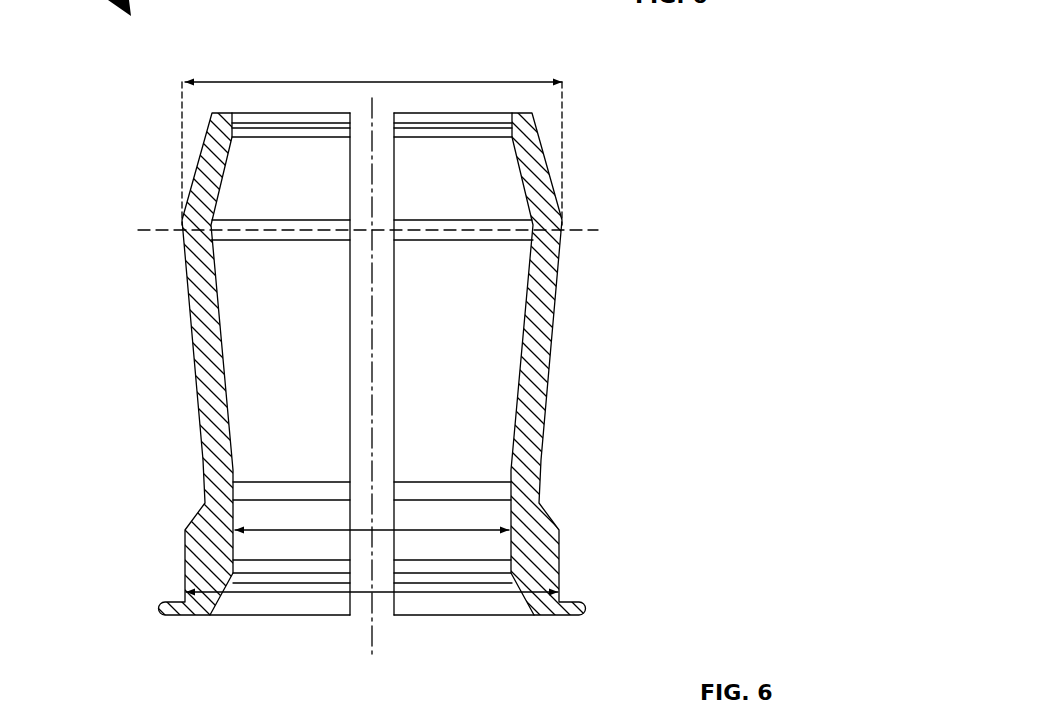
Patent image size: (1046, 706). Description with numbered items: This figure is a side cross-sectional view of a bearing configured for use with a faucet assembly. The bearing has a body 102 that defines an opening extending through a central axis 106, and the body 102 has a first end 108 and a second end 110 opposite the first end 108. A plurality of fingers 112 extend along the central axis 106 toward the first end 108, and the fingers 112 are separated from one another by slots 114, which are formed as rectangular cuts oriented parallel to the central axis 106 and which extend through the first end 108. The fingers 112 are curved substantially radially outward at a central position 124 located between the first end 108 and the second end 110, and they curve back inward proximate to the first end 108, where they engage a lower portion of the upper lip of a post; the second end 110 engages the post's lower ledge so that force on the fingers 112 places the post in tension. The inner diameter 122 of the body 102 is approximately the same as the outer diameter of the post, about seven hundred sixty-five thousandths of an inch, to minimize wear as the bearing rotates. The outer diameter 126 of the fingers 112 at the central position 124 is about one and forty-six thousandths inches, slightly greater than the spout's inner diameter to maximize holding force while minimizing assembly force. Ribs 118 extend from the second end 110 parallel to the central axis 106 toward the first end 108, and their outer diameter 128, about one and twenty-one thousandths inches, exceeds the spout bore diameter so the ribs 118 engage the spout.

The body 102 is at (578, 356).
The central axis 106 is at (372, 357).
The first end 108 is at (290, 62).
The second end 110 is at (255, 626).
The fingers 112 is at (550, 267).
The slots 114 is at (382, 212).
The ribs 118 is at (553, 558).
The inner diameter 122 is at (305, 530).
The central position 124 is at (156, 230).
The outer diameter 126 is at (412, 82).
The outer diameter 128 is at (428, 595).